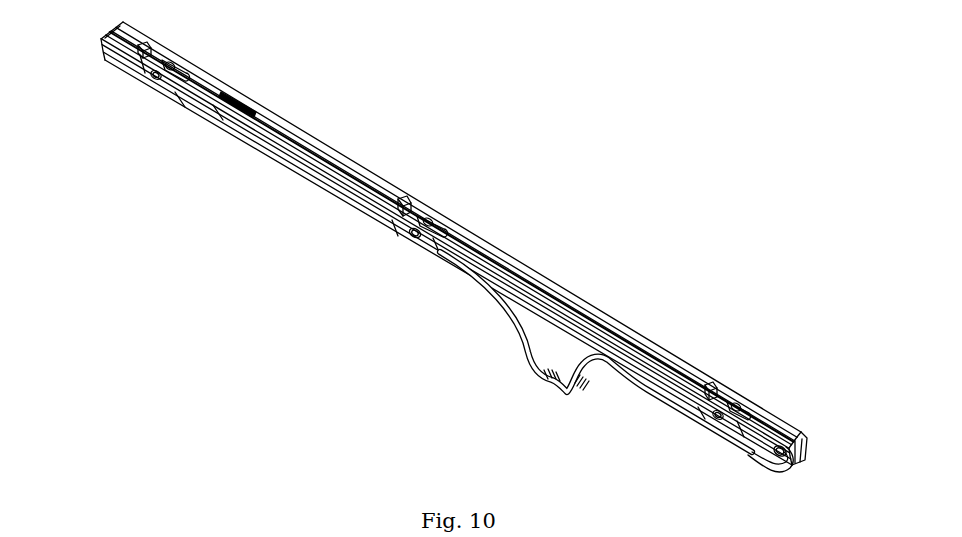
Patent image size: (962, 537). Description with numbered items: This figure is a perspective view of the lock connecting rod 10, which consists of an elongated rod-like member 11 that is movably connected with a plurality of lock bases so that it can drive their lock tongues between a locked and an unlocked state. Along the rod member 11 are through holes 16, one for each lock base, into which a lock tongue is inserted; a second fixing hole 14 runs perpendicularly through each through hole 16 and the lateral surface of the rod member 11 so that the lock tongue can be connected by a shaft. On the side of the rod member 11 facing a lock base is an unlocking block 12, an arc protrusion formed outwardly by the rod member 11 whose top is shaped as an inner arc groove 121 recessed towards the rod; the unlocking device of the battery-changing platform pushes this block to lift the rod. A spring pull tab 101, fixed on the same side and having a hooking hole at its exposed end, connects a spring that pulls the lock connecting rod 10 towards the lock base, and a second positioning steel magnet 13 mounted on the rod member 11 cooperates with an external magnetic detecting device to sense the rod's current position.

The lock connecting rod 10 is at (454, 254).
The rod member 11 is at (607, 314).
The unlocking block 12 is at (588, 388).
The inner arc groove 121 is at (547, 383).
The second positioning steel magnet 13 is at (770, 431).
The second fixing hole 14 is at (183, 56).
The through hole 16 is at (440, 229).
The spring pull tab 101 is at (238, 93).